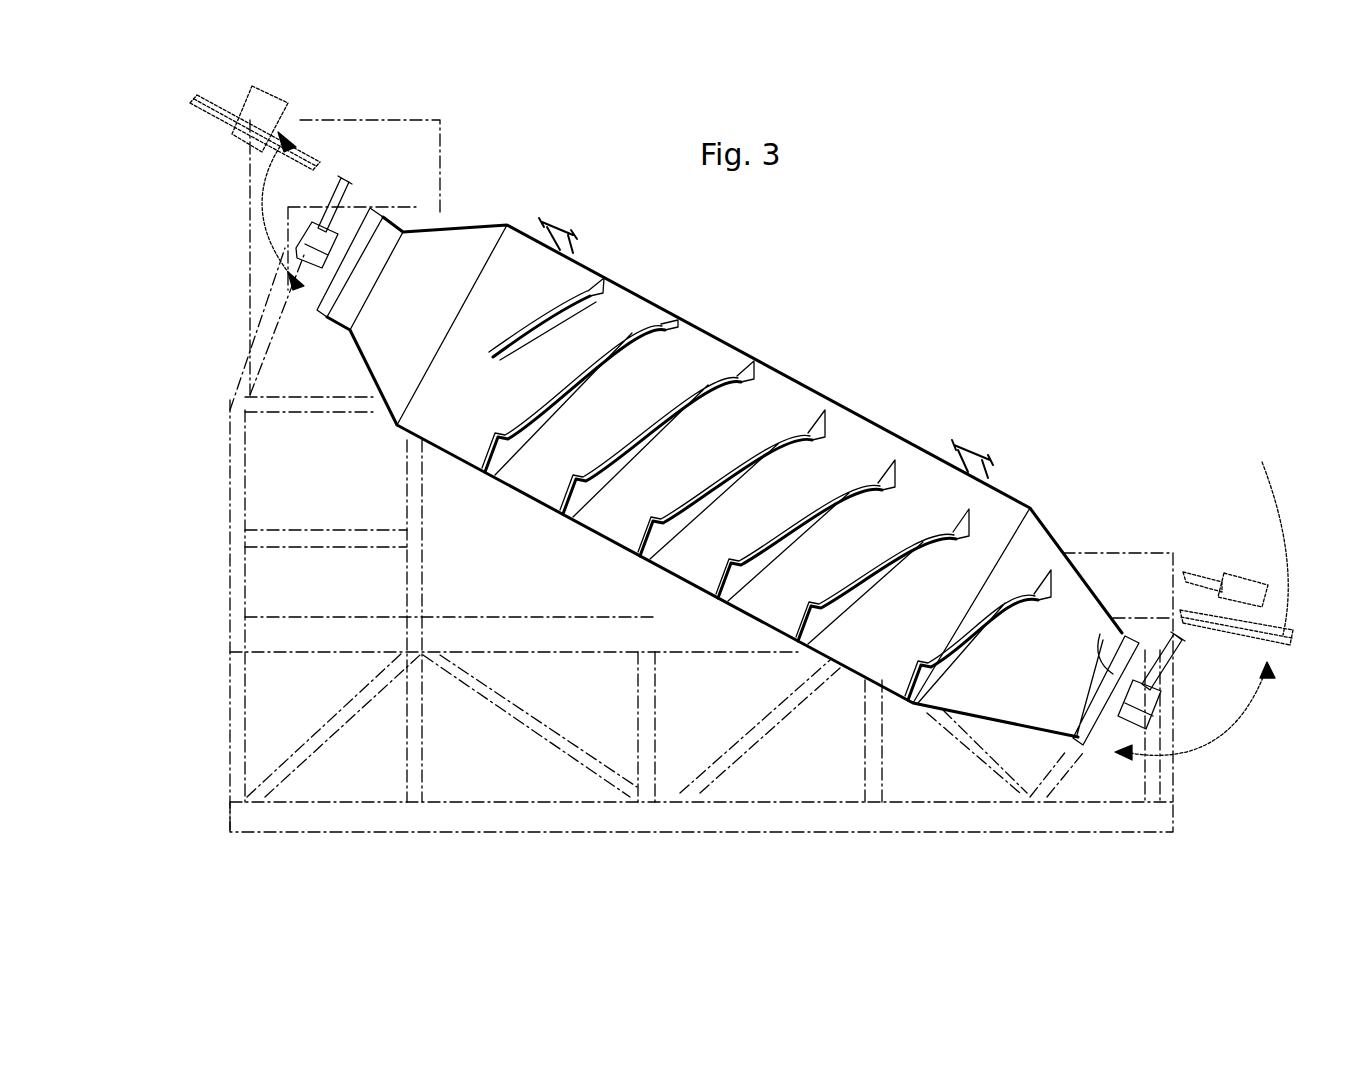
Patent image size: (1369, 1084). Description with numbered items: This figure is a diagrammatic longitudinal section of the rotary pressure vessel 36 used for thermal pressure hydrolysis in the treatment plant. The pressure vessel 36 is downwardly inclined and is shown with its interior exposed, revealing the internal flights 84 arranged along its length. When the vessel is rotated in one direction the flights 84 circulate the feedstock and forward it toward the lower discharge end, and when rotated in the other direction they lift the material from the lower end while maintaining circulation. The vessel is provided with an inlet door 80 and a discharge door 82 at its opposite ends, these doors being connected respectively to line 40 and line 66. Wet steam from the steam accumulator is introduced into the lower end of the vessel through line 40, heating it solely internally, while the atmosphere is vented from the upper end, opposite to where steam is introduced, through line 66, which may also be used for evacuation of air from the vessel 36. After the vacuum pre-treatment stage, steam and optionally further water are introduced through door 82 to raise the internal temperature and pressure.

The pressure vessel 36 is at (838, 405).
The internal flights 84 is at (596, 291).
The line 66 is at (350, 187).
The inlet door 80 is at (312, 288).
The line 40 is at (1178, 660).
The discharge door 82 is at (1118, 672).